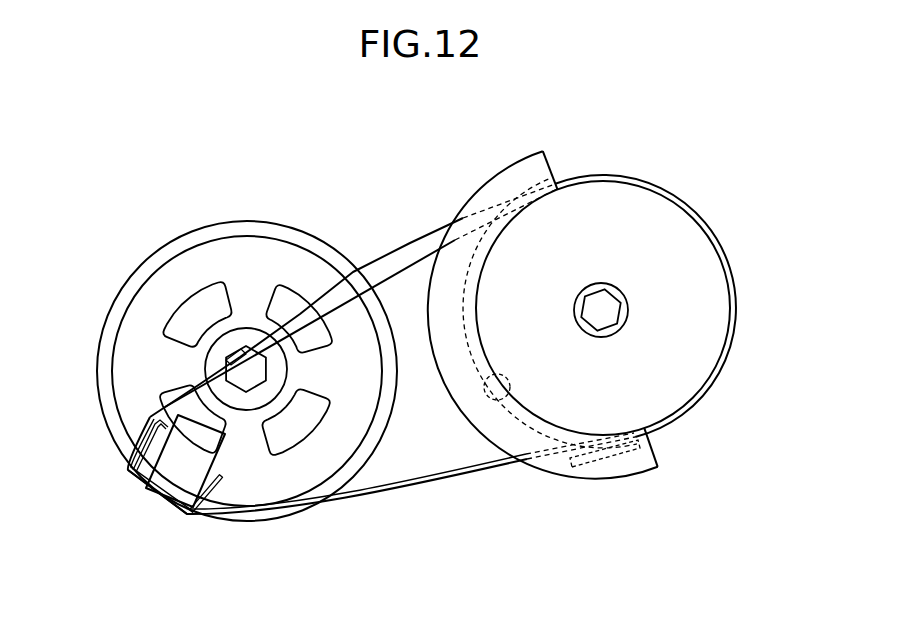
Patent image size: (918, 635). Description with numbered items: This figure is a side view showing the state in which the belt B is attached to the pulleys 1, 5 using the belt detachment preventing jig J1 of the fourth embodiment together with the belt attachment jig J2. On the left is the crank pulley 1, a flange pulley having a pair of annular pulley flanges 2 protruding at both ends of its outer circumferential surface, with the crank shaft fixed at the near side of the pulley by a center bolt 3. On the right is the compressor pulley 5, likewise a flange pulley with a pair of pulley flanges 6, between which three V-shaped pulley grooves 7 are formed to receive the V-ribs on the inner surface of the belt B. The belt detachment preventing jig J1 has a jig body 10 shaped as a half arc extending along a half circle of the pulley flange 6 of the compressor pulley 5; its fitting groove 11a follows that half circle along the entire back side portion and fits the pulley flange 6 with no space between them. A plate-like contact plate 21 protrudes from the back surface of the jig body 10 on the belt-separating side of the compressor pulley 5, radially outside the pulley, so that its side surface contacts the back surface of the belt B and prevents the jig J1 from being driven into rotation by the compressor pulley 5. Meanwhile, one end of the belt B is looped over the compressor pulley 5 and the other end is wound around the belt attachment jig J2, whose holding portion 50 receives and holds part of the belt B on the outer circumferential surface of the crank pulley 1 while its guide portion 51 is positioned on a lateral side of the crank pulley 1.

The crank pulley 1 is at (122, 360).
The pulley flanges 2 is at (195, 237).
The center bolt 3 is at (253, 372).
The compressor pulley 5 is at (695, 277).
The pulley flanges 6 is at (708, 225).
The pulley grooves 7 is at (605, 314).
The jig body 10 is at (637, 462).
The fitting groove 11a is at (503, 393).
The contact plate 21 is at (593, 462).
The holding portion 50 is at (143, 490).
The guide portion 51 is at (143, 440).
The belt B is at (377, 267).
The belt detachment preventing jig J1 is at (502, 170).
The belt attachment jig J2 is at (167, 510).